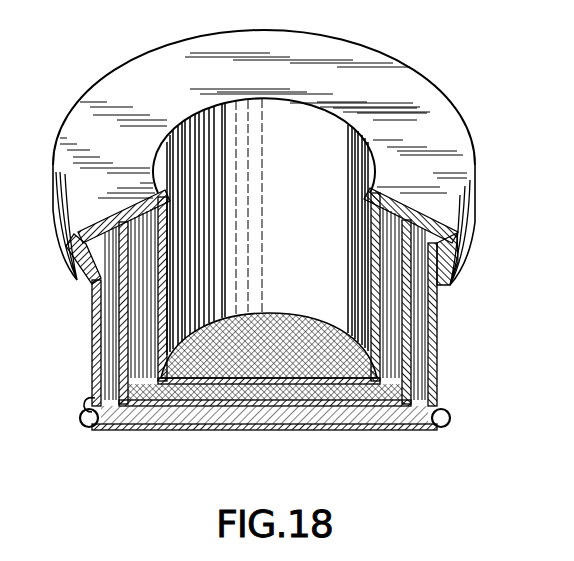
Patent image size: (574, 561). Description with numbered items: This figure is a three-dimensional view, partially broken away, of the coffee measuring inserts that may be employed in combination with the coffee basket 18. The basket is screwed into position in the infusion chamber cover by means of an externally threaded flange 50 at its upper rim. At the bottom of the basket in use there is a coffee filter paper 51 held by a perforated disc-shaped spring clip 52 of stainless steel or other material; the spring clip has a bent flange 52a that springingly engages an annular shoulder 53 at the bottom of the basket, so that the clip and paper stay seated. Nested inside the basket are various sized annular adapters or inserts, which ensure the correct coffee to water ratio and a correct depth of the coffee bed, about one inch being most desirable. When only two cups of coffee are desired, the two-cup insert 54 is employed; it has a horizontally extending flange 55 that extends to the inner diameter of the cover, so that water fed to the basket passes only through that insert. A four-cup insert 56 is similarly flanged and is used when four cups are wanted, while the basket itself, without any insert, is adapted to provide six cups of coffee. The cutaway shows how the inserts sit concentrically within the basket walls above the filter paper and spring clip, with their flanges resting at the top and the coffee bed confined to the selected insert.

The container body outer wall 18 is at (433, 345).
The externally threaded flange 50 is at (82, 277).
The coffee filter paper 51 is at (173, 418).
The perforated disc-shaped spring clip 52 is at (108, 430).
The bent flange 52a is at (445, 402).
The annular shoulder 53 is at (84, 399).
The 2-cup insert 54 is at (372, 249).
The horizontally extending flange 55 is at (444, 197).
The 4-cup insert 56 is at (405, 318).